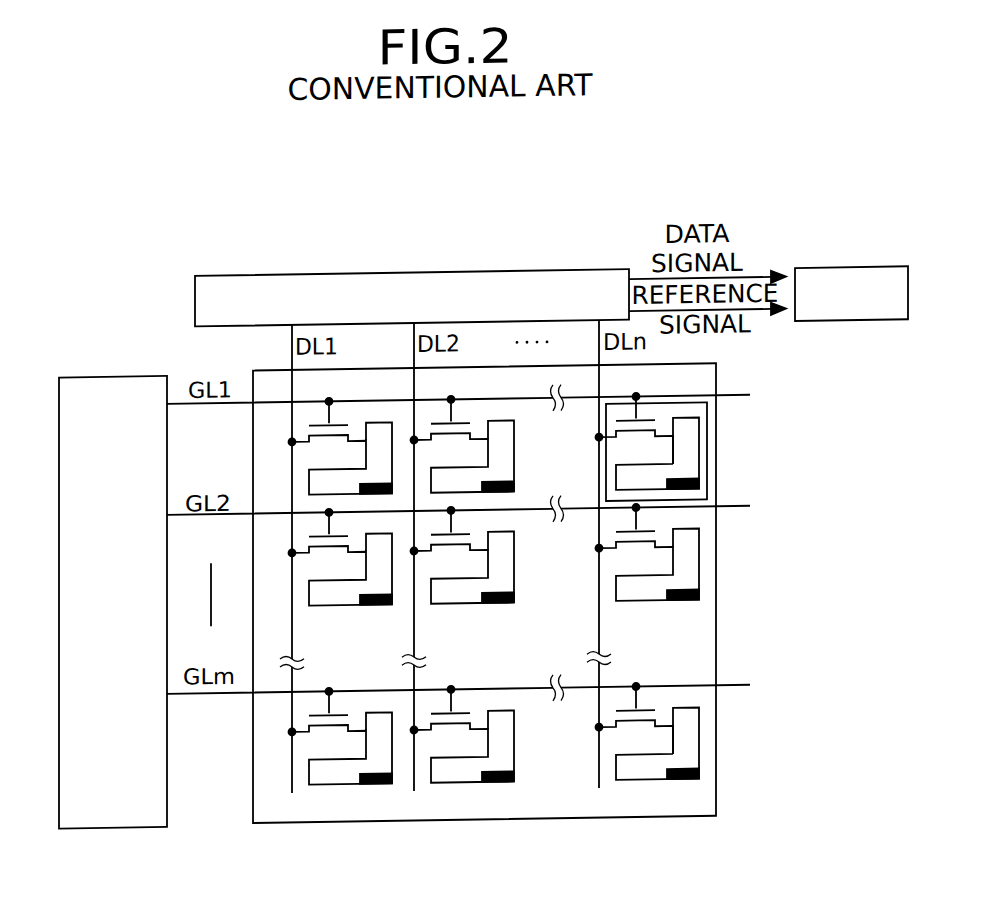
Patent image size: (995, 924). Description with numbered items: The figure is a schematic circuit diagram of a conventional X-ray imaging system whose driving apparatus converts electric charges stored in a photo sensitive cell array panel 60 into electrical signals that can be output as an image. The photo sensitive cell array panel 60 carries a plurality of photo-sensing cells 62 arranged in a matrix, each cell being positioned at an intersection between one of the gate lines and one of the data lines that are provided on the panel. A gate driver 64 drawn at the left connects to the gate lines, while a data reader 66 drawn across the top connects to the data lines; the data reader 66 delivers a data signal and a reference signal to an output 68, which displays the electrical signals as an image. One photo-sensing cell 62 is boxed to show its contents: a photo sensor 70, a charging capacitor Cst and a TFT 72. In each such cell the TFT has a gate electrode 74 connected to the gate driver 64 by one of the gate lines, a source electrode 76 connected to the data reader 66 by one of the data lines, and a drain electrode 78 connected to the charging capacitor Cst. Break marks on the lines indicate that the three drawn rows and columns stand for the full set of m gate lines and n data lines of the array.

The photo sensitive cell array panel 60 is at (717, 382).
The photo-sensing cell 62 is at (691, 454).
The gate driver 64 is at (64, 371).
The data reader 66 is at (584, 271).
The output 68 is at (866, 272).
The photo sensor 70 is at (707, 453).
The TFT 72 is at (617, 435).
The gate electrode 74 is at (642, 662).
The source electrode 76 is at (594, 745).
The drain electrode 78 is at (696, 686).
The charging capacitor Cst is at (744, 505).